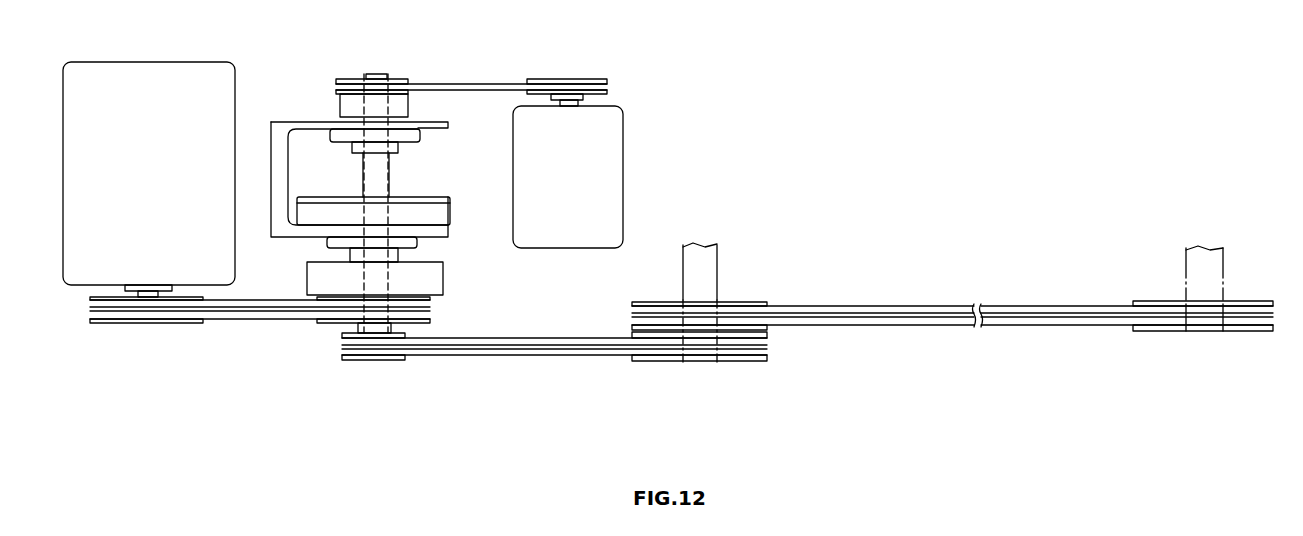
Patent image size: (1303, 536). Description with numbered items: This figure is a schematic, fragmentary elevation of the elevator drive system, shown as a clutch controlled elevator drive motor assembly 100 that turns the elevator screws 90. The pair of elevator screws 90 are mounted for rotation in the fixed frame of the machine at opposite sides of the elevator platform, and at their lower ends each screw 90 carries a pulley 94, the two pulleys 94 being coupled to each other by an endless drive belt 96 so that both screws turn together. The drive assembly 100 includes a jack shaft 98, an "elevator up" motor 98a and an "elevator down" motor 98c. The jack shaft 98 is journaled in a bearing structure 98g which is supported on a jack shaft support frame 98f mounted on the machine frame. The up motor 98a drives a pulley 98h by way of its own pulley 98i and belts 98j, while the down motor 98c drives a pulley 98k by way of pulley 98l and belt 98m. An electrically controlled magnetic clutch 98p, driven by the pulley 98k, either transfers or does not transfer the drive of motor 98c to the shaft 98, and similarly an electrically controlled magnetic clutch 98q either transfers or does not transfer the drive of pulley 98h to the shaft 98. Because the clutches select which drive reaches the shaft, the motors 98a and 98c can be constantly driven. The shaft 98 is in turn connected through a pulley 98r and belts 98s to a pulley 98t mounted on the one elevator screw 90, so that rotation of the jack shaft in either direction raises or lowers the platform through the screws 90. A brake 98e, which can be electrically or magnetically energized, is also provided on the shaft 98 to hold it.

The elevator up motor 98a is at (160, 200).
The elevator down motor 98c is at (582, 171).
The jack shaft 98 is at (390, 167).
The brake 98e is at (438, 221).
The jack shaft support frame 98f is at (444, 128).
The bearing structure 98g is at (351, 140).
The pulley 98h is at (330, 324).
The pulley 98i is at (117, 324).
The belts 98j is at (244, 319).
The pulley 98k is at (398, 80).
The pulley 98l is at (589, 79).
The belt 98m is at (486, 89).
The magnetic clutch 98p is at (408, 105).
The magnetic clutch 98q is at (443, 279).
The pulley 98r is at (394, 361).
The belts 98s is at (529, 358).
The pulley 98t is at (726, 362).
The elevator screws 90 is at (715, 285).
The pulley 94 is at (649, 304).
The endless drive belt 96 is at (940, 322).
The clutch controlled elevator drive motor assembly 100 is at (642, 395).